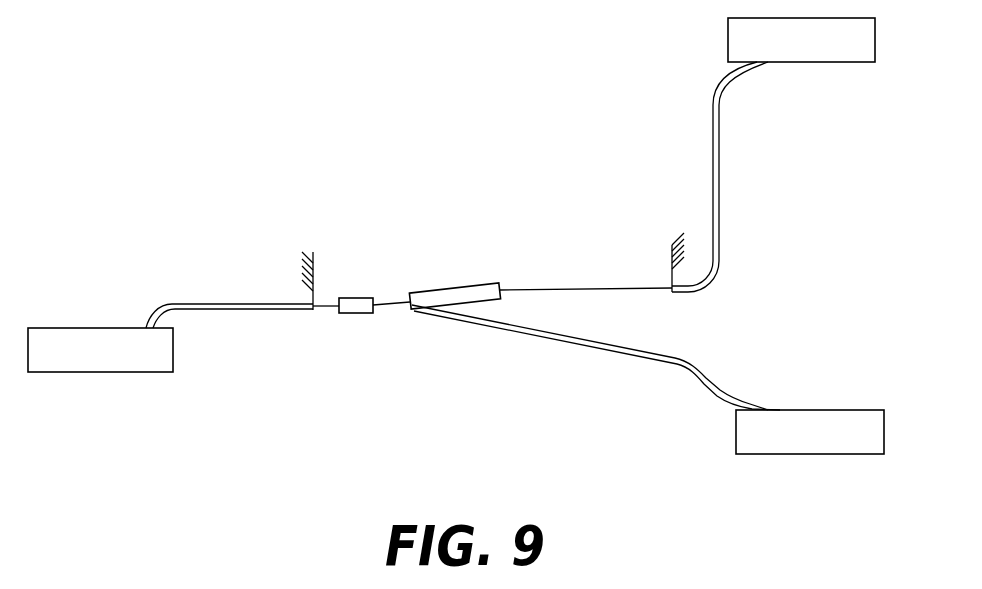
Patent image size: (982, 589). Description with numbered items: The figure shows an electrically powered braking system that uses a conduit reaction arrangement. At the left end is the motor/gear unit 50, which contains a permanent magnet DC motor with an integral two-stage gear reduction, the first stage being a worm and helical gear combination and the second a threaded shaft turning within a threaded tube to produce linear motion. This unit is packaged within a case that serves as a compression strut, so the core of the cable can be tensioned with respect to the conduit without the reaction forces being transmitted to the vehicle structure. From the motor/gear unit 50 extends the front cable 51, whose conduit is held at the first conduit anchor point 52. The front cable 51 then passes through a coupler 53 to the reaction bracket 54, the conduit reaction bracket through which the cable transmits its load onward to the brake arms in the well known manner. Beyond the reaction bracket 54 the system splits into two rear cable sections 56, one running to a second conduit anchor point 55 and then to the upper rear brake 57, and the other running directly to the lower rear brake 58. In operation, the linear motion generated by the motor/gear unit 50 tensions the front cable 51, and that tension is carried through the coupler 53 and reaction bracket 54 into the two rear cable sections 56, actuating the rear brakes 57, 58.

The motor/gear unit 50 is at (85, 378).
The front cable 51 is at (184, 291).
The first conduit anchor point 52 is at (316, 336).
The coupler 53 is at (349, 279).
The reaction bracket 54 is at (441, 276).
The second conduit anchor point 55 is at (652, 228).
The rear cable sections 56 is at (728, 200).
The rear brake 57 is at (864, 73).
The rear brake 58 is at (850, 397).